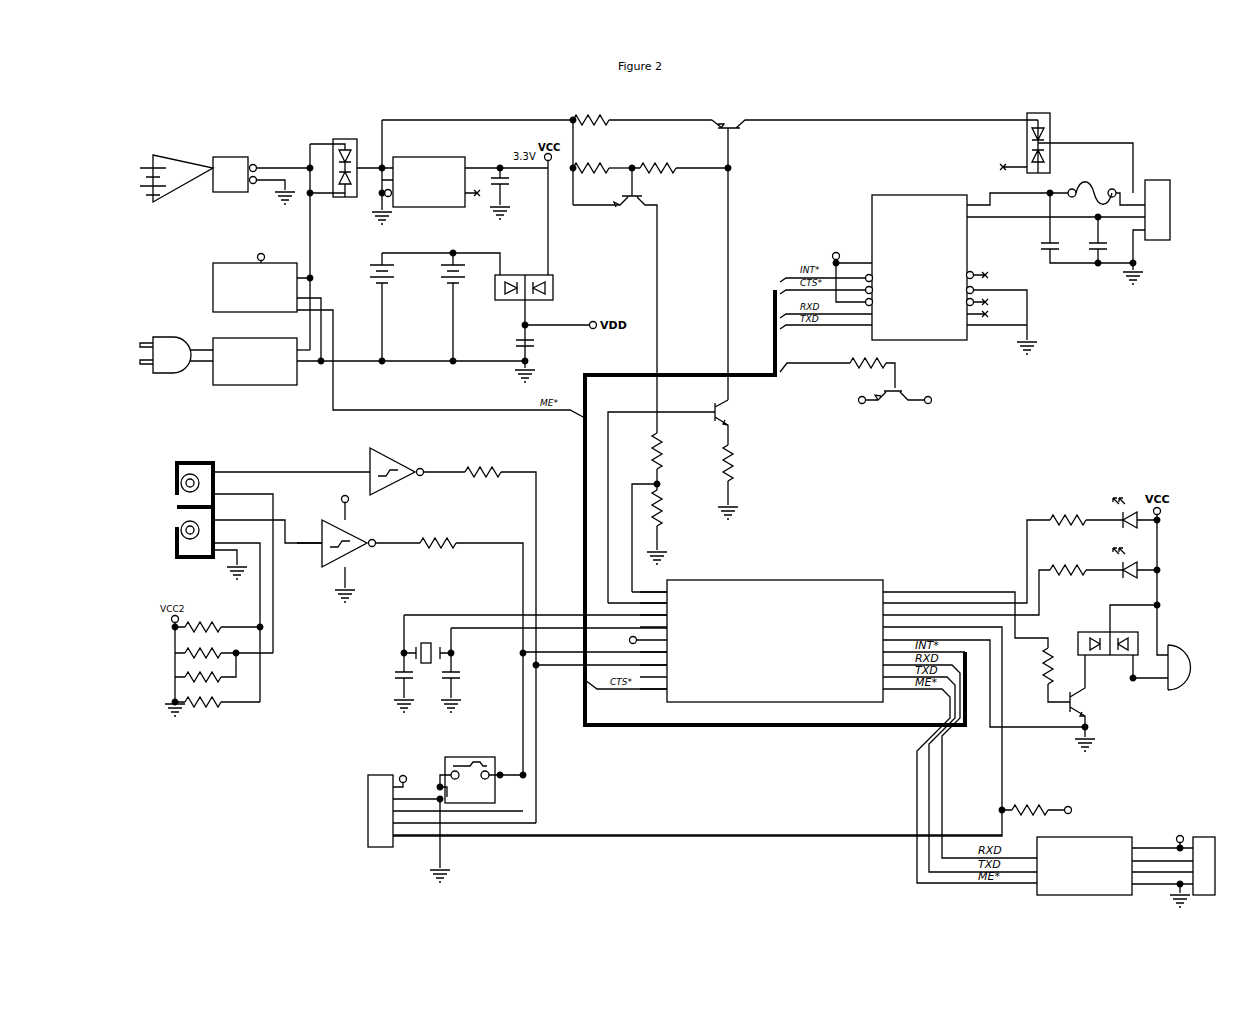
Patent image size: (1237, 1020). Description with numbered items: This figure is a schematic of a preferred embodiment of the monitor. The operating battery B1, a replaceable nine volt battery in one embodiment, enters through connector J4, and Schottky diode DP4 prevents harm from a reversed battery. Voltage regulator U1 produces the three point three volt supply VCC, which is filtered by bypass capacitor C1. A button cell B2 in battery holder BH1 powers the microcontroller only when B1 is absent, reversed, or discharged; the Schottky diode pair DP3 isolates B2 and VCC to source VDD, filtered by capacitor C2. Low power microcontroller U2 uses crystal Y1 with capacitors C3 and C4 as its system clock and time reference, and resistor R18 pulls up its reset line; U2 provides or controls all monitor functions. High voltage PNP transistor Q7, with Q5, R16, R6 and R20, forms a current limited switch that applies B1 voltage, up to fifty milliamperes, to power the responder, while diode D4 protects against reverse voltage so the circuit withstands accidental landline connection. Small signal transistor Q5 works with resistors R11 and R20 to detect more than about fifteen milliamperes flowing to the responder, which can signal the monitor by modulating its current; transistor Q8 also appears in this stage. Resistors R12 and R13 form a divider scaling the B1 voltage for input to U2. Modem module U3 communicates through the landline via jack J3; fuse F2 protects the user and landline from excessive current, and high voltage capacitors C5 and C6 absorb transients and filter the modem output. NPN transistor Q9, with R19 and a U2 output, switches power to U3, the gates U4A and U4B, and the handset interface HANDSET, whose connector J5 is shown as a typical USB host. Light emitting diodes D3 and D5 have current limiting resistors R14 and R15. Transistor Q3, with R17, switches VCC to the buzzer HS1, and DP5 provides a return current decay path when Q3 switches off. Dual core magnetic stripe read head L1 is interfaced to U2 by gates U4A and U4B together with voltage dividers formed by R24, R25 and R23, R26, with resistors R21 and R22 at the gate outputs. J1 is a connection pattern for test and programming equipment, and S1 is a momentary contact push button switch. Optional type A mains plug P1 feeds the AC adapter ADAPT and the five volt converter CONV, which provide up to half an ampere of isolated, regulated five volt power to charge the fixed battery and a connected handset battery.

The operating battery B1 is at (176, 178).
The connector J4 +9V J4 is at (261, 173).
The Schottky diode DP4 is at (346, 168).
The voltage regulator U1 is at (460, 172).
The filter or bypass capacitor C1 is at (517, 192).
The resistor R11 is at (641, 115).
The resistor R20 is at (602, 166).
The resistor R6 is at (671, 157).
The transistor MMBT3906 Q8 is at (619, 300).
The high voltage PNP bipolar transistor Q7 is at (868, 244).
The diode D4 is at (1066, 140).
The fuse F2 is at (1101, 175).
The RJ-11 connector J3 is at (1152, 213).
The high voltage capacitor C6 is at (1079, 238).
The high voltage capacitor C5 is at (1098, 250).
The modem module U3 is at (982, 261).
The button cell B2 is at (419, 297).
The battery holder BH1 is at (451, 316).
The Schottky diode pair DP3 is at (544, 308).
The filter or bypass capacitor C2 is at (512, 356).
The +5 V converter CONV is at (399, 329).
The AC adapter ADAPT is at (261, 361).
The type A plug P1 is at (171, 358).
The dual core magnetic stripe read head L1 is at (273, 564).
The interface circuit section U4B is at (393, 463).
The interface circuit section U4A is at (387, 543).
The resistor 10K0 R21 is at (480, 637).
The resistor 10K0 R22 is at (449, 648).
The voltage divider resistor R23 is at (219, 620).
The voltage divider resistor R24 is at (224, 646).
The voltage divider resistor R25 is at (205, 667).
The voltage divider resistor R26 is at (217, 702).
The system clock capacitor C3 is at (513, 656).
The system clock crystal Y1 is at (427, 645).
The system clock capacitor C4 is at (554, 670).
The low power microcontroller U2 is at (756, 641).
The voltage divider resistor R13 is at (673, 460).
The voltage divider resistor R12 is at (670, 526).
The PNP small signal transistor Q5 is at (762, 418).
The resistor R16 is at (741, 480).
The resistor R19 is at (837, 364).
The NPN transistor Q9 is at (901, 407).
The current limiting resistor R15 is at (1086, 517).
The light emitting diode D5 is at (1126, 498).
The current limiting resistor R14 is at (1086, 567).
The light emitting diode D3 is at (1126, 571).
The diode pair DP5 is at (1111, 643).
The resistor R17 is at (1040, 675).
The transistor Q3 is at (1122, 714).
The buzzer HS1 is at (1190, 653).
The connection pattern J1 is at (676, 813).
The momentary contact push button switch S1 is at (480, 811).
The reset pull-up resistor R18 is at (1050, 797).
The handset interface HANDSET is at (1115, 866).
The handset connector J5 is at (1191, 859).